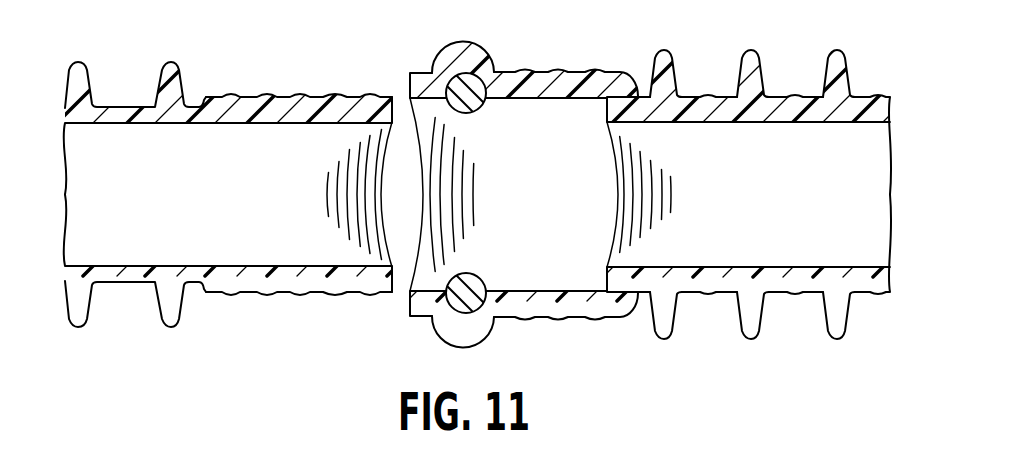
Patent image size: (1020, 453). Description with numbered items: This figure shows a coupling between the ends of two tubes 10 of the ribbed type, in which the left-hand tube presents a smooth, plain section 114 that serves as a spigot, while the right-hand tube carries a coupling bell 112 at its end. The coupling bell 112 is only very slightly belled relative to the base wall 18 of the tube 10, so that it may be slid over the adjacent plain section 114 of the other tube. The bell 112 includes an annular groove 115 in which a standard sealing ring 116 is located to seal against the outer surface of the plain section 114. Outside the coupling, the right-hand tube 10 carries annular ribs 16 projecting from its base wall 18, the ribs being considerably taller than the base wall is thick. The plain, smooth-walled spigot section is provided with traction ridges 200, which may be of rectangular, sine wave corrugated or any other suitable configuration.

The tube 10 is at (502, 204).
The ribs 16 is at (849, 78).
The base wall 18 is at (800, 122).
The coupling bell 112 is at (524, 72).
The plain section 114 is at (257, 123).
The annular groove 115 is at (433, 77).
The sealing ring 116 is at (479, 110).
The traction ridges 200 is at (263, 97).